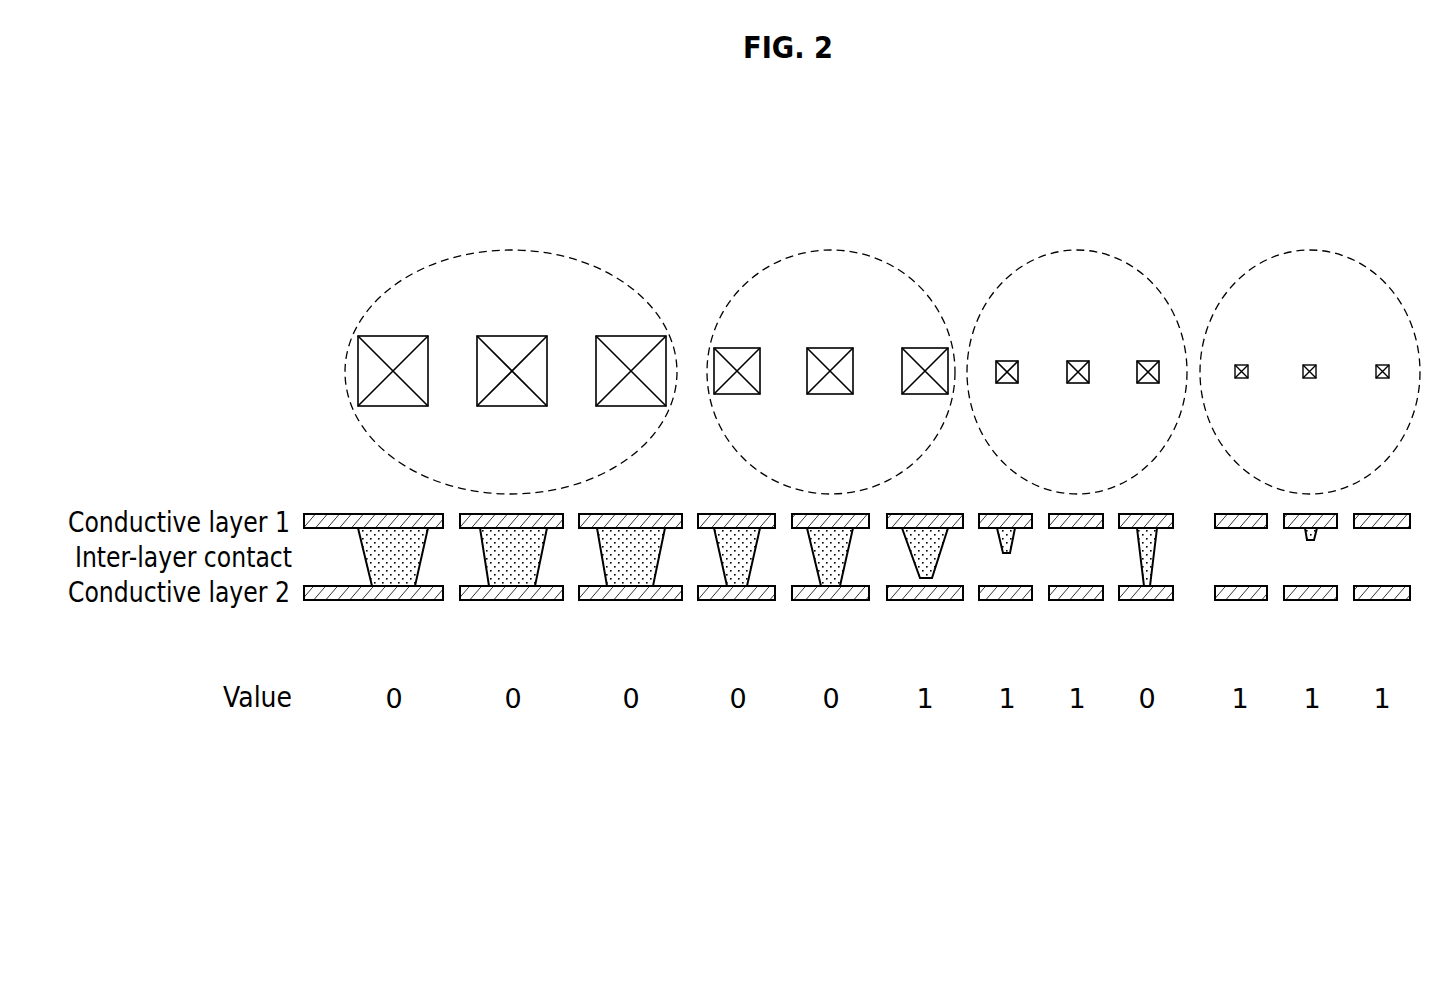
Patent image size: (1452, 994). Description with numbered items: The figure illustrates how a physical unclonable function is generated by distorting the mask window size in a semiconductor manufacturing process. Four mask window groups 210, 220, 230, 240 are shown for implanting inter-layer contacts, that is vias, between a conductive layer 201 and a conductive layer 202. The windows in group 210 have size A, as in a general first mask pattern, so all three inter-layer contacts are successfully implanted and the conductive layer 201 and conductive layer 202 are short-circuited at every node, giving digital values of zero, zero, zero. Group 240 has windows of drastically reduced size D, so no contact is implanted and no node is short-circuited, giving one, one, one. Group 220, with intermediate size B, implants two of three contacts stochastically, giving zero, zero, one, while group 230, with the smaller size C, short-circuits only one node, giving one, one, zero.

The mask window group 210 is at (509, 250).
The mask window group 220 is at (827, 250).
The mask window group 230 is at (1074, 250).
The mask window group 240 is at (1307, 250).
The conductive layer 201 is at (1382, 513).
The conductive layer 202 is at (1383, 600).